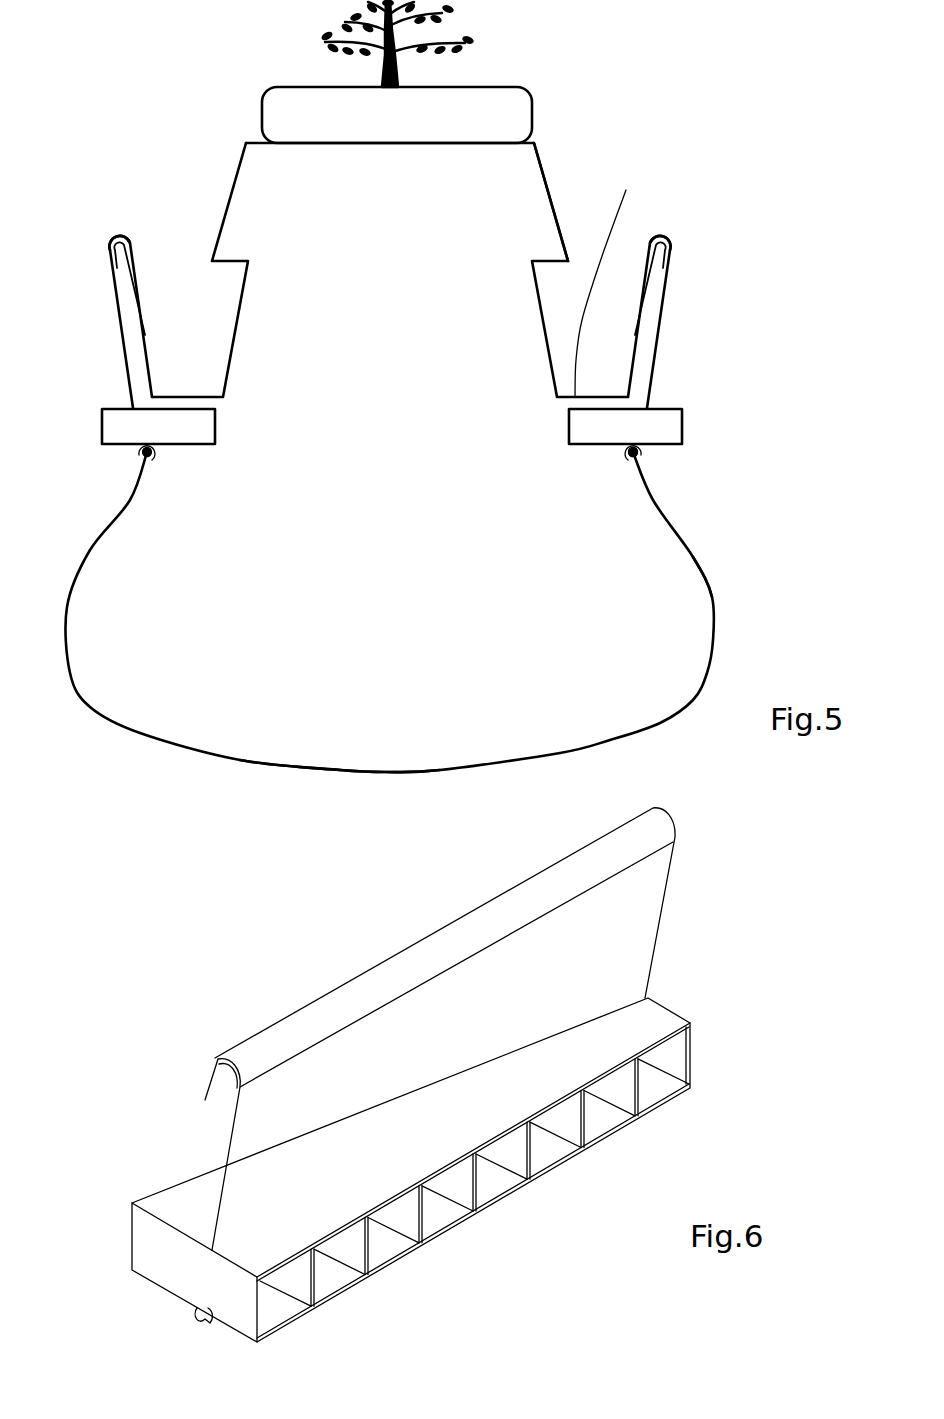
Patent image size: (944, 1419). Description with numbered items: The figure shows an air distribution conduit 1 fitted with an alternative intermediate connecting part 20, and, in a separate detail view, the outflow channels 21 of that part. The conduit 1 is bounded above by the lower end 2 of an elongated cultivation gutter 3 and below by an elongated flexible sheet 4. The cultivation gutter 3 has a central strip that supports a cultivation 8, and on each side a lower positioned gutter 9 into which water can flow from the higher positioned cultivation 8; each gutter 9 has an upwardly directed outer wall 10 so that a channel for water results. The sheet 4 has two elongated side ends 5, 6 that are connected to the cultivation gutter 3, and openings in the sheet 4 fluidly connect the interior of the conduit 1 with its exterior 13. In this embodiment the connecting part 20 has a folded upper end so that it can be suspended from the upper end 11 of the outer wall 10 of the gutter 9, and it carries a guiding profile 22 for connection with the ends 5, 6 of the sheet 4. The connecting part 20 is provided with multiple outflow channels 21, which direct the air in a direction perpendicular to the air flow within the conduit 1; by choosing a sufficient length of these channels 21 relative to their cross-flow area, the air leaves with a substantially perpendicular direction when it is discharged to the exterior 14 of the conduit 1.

In FIG. 5, the conduit 1 is at (667, 567).
In FIG. 5, the lower end 2 is at (290, 145).
In FIG. 5, the cultivation gutter 3 is at (543, 163).
In FIG. 5, the flexible sheet 4 is at (712, 585).
In FIG. 5, the side end 5 is at (137, 452).
In FIG. 5, the side end 6 is at (642, 455).
In FIG. 5, the cultivation 8 is at (495, 97).
In FIG. 5, the gutter 9 is at (608, 277).
In FIG. 5, the outer wall 10 is at (648, 293).
In FIG. 5, the upper end 11 is at (667, 250).
In FIG. 5, the exterior 13 is at (380, 724).
In FIG. 5, the exterior 14 is at (267, 814).
In FIG. 5, the intermediate connecting part 20 is at (655, 350).
In FIG. 6, the intermediate connecting part 20 is at (645, 930).
In FIG. 5, the outflow channels 21 is at (672, 423).
In FIG. 6, the outflow channels 21 is at (440, 1205).
In FIG. 5, the guiding profile 22 is at (635, 447).
In FIG. 6, the guiding profile 22 is at (197, 1312).